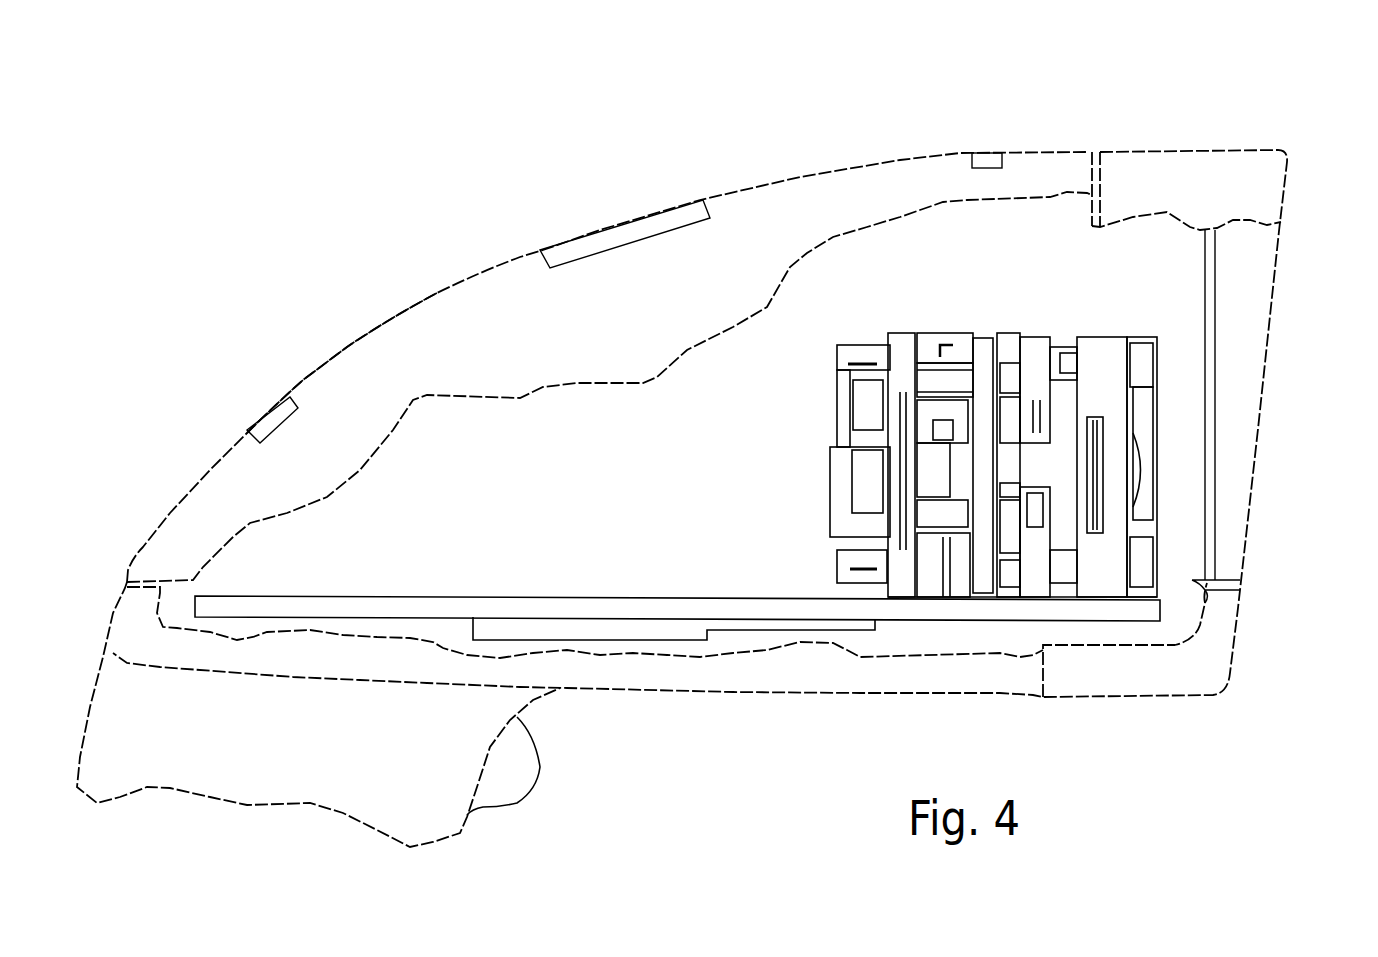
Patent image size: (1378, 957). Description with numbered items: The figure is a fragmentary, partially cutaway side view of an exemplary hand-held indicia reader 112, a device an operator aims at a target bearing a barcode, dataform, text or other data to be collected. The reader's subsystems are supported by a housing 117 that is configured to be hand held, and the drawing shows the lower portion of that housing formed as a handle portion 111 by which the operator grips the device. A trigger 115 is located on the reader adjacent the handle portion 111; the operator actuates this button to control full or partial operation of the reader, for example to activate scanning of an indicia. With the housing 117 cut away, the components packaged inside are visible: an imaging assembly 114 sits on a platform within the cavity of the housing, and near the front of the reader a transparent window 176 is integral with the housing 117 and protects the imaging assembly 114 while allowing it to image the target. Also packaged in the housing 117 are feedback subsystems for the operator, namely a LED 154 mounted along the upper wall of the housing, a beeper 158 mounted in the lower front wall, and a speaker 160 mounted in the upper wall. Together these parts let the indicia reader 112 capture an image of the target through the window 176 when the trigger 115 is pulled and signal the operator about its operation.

The handle portion 111 is at (292, 758).
The indicia reader 112 is at (510, 203).
The imaging assembly 114 is at (802, 415).
The trigger 115 is at (540, 770).
The housing 117 is at (347, 348).
The LED 154 is at (990, 163).
The beeper 158 is at (272, 423).
The speaker 160 is at (633, 227).
The transparent window 176 is at (1215, 290).